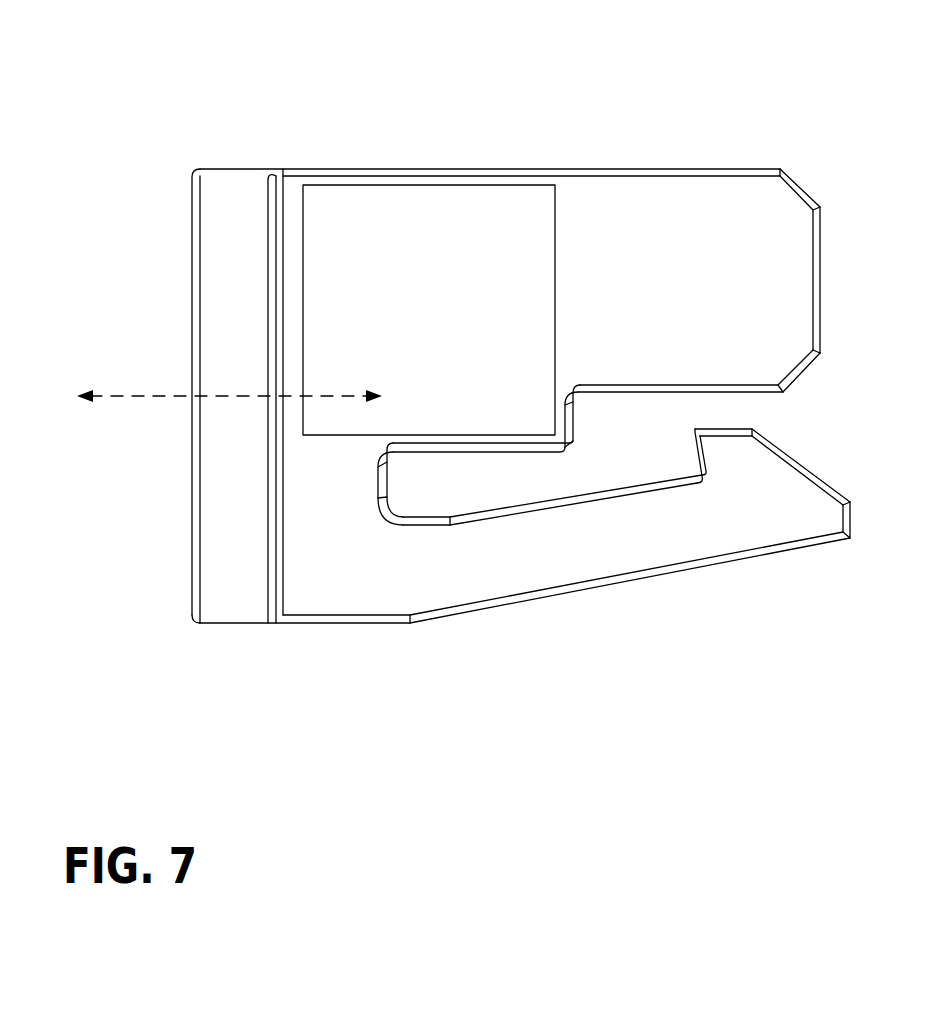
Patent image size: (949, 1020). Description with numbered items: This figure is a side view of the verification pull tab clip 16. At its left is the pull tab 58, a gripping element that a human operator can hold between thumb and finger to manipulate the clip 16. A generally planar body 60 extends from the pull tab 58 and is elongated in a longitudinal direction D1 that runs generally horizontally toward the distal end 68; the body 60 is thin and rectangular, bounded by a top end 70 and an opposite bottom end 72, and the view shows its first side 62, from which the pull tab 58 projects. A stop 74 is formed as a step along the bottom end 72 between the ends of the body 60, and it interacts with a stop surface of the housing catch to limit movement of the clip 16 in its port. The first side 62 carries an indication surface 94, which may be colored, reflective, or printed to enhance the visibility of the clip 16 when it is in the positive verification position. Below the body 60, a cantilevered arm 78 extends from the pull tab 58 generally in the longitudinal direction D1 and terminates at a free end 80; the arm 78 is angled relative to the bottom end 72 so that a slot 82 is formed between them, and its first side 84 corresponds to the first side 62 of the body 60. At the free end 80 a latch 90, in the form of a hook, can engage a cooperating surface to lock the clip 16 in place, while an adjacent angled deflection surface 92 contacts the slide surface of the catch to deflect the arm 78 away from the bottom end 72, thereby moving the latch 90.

The verification pull tab clip 16 is at (184, 104).
The pull tab 58 is at (217, 543).
The body 60 is at (802, 174).
The first side 62 is at (732, 282).
The distal end 68 is at (820, 300).
The top end 70 is at (575, 168).
The bottom end 72 is at (750, 394).
The stop 74 is at (575, 425).
The cantilevered arm 78 is at (498, 615).
The free end 80 is at (850, 520).
The slot 82 is at (400, 527).
The first side 84 is at (670, 526).
The latch 90 is at (695, 448).
The angled deflection surface 92 is at (817, 477).
The indication surface 94 is at (303, 237).
The longitudinal direction D1 is at (148, 398).